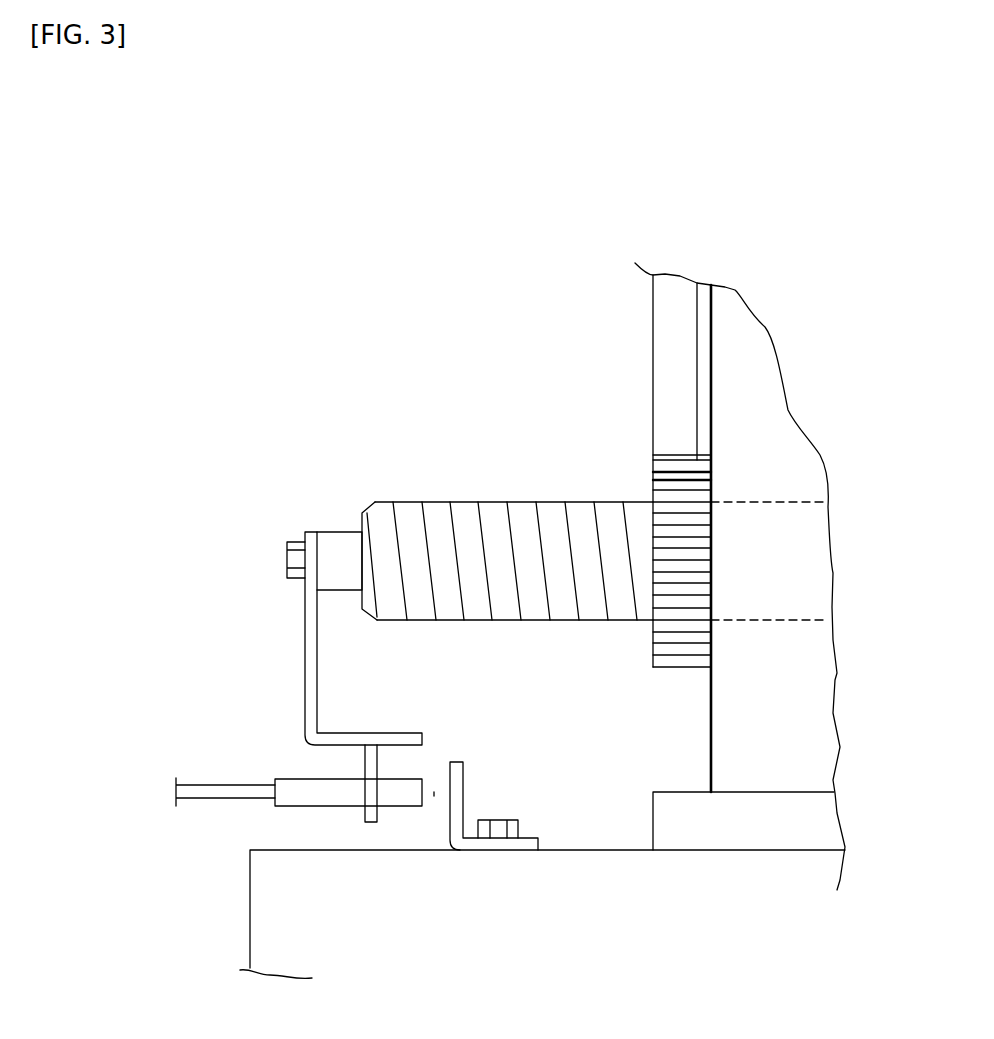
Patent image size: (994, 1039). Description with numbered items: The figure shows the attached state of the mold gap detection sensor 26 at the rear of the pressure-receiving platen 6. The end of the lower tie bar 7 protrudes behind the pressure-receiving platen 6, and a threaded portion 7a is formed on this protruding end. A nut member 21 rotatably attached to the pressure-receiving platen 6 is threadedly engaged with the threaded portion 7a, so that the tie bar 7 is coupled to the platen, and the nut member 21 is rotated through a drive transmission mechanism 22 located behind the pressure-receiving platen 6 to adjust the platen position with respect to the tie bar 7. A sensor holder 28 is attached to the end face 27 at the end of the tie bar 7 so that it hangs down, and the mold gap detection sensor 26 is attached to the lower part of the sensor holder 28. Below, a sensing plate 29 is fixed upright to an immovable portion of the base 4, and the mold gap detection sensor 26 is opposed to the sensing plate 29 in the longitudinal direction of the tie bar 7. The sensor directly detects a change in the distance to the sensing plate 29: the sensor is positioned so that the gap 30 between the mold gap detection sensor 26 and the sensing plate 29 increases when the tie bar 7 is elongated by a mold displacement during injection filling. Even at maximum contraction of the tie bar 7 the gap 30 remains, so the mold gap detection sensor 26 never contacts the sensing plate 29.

The base 4 is at (600, 850).
The pressure-receiving platen 6 is at (808, 710).
The tie bar 7 is at (606, 622).
The threaded portion 7a is at (518, 502).
The nut member 21 is at (652, 472).
The drive transmission mechanism 22 is at (652, 318).
The mold gap detection sensor 26 is at (328, 806).
The end face 27 is at (350, 510).
The sensor holder 28 is at (304, 632).
The sensing plate 29 is at (465, 785).
The gap 30 is at (434, 792).